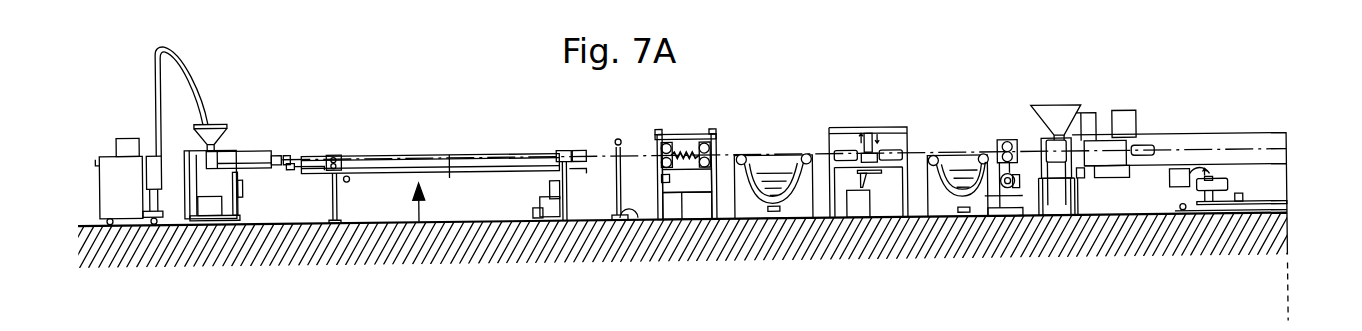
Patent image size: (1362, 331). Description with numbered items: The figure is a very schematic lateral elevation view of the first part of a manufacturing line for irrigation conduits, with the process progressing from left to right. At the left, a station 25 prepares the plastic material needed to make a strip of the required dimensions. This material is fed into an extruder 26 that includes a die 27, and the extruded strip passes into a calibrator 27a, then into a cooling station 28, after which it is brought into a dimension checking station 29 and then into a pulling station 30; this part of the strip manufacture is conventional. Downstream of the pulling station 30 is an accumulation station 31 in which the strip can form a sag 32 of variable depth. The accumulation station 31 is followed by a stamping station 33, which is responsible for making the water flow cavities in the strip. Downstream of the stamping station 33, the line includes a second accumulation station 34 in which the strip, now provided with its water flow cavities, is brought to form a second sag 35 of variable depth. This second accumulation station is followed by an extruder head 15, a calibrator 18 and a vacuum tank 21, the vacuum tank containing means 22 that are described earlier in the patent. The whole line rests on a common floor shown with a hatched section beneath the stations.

The station 25 is at (130, 194).
The extruder 26 is at (227, 191).
The die 27 is at (281, 150).
The calibrator 27a is at (335, 151).
The cooling station 28 is at (419, 220).
The dimension checking station 29 is at (637, 220).
The pulling station 30 is at (682, 212).
The accumulation station 31 is at (793, 196).
The sag 32 is at (777, 130).
The stamping station 33 is at (885, 199).
The second accumulation station 34 is at (945, 200).
The sag 35 is at (967, 127).
The extruder head 15 is at (1057, 199).
The calibrator 18 is at (1103, 165).
The means 22 is at (1142, 161).
The vacuum tank 21 is at (1180, 160).